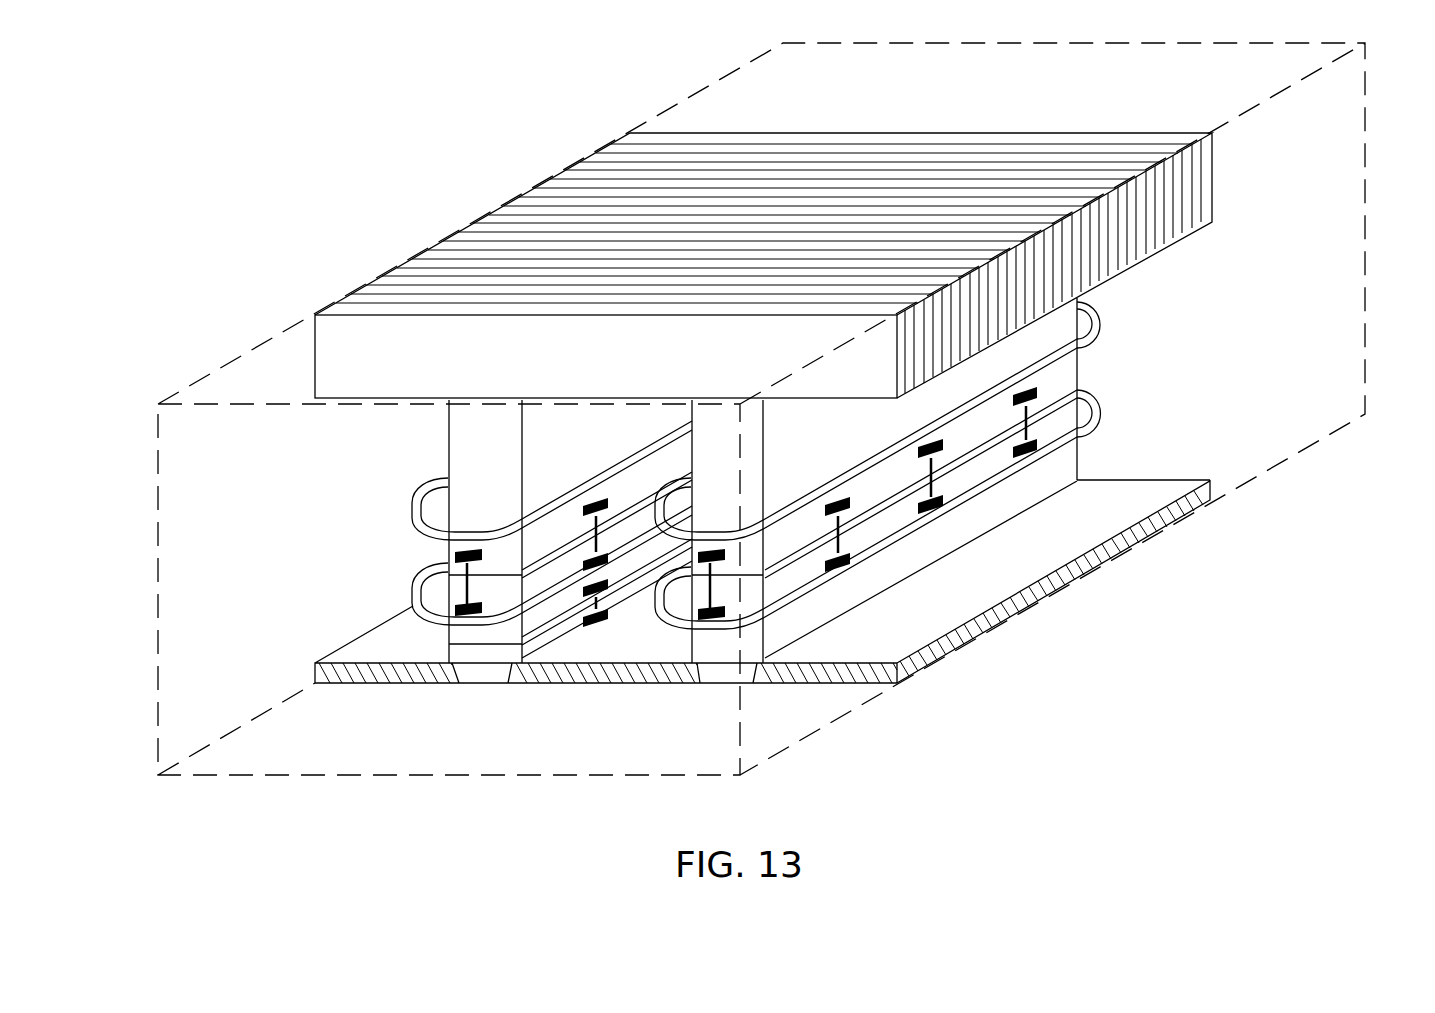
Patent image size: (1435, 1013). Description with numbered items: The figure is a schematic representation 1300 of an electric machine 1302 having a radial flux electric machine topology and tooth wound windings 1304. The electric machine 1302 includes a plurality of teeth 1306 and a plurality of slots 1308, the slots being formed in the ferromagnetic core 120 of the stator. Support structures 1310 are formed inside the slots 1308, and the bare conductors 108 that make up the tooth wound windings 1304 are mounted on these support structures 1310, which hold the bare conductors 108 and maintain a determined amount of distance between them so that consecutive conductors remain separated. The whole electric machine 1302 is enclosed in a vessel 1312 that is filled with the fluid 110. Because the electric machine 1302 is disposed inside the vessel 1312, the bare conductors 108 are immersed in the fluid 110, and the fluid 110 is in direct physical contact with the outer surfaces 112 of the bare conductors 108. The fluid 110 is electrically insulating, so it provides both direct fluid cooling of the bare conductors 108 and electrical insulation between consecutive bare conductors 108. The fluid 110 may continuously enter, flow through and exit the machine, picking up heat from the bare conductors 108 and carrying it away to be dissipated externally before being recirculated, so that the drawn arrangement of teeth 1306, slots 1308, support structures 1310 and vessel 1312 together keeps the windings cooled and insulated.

The bare conductors 108 is at (1057, 449).
The fluid 110 is at (1338, 153).
The outer surfaces 112 is at (717, 627).
The ferromagnetic core 120 is at (475, 245).
The schematic representation 1300 is at (196, 98).
The electric machine 1302 is at (696, 411).
The tooth wound windings 1304 is at (1083, 350).
The teeth 1306 is at (470, 437).
The slots 1308 is at (503, 637).
The support structures 1310 is at (585, 610).
The vessel 1312 is at (195, 665).